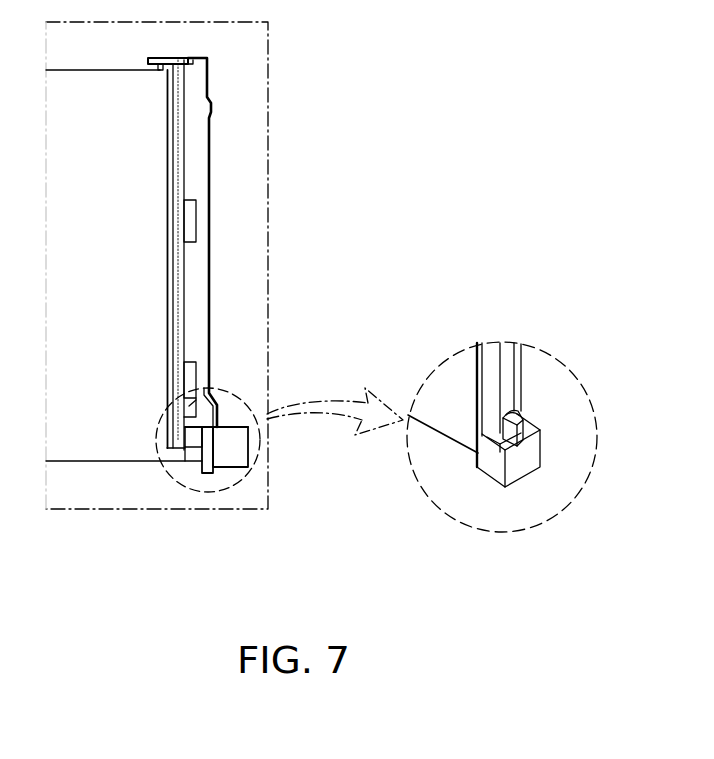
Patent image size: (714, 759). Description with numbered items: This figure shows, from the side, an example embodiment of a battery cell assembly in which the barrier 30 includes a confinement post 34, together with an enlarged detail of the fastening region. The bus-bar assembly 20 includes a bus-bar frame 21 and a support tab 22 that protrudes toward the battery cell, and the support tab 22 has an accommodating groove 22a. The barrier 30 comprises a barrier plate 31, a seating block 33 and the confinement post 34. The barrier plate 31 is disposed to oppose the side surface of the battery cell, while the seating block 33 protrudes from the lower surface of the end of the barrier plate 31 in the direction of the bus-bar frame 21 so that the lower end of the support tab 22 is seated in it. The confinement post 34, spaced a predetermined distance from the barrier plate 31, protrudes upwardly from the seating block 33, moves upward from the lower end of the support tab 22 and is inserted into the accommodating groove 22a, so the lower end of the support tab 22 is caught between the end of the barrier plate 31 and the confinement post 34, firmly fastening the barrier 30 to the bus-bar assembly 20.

The bus-bar assembly 20 is at (346, 235).
The bus-bar frame 21 is at (197, 256).
The support tab 22 is at (180, 437).
The accommodating groove 22a is at (192, 393).
The barrier 30 is at (238, 565).
The barrier plate 31 is at (110, 435).
The seating block 33 is at (183, 460).
The confinement post 34 is at (196, 437).